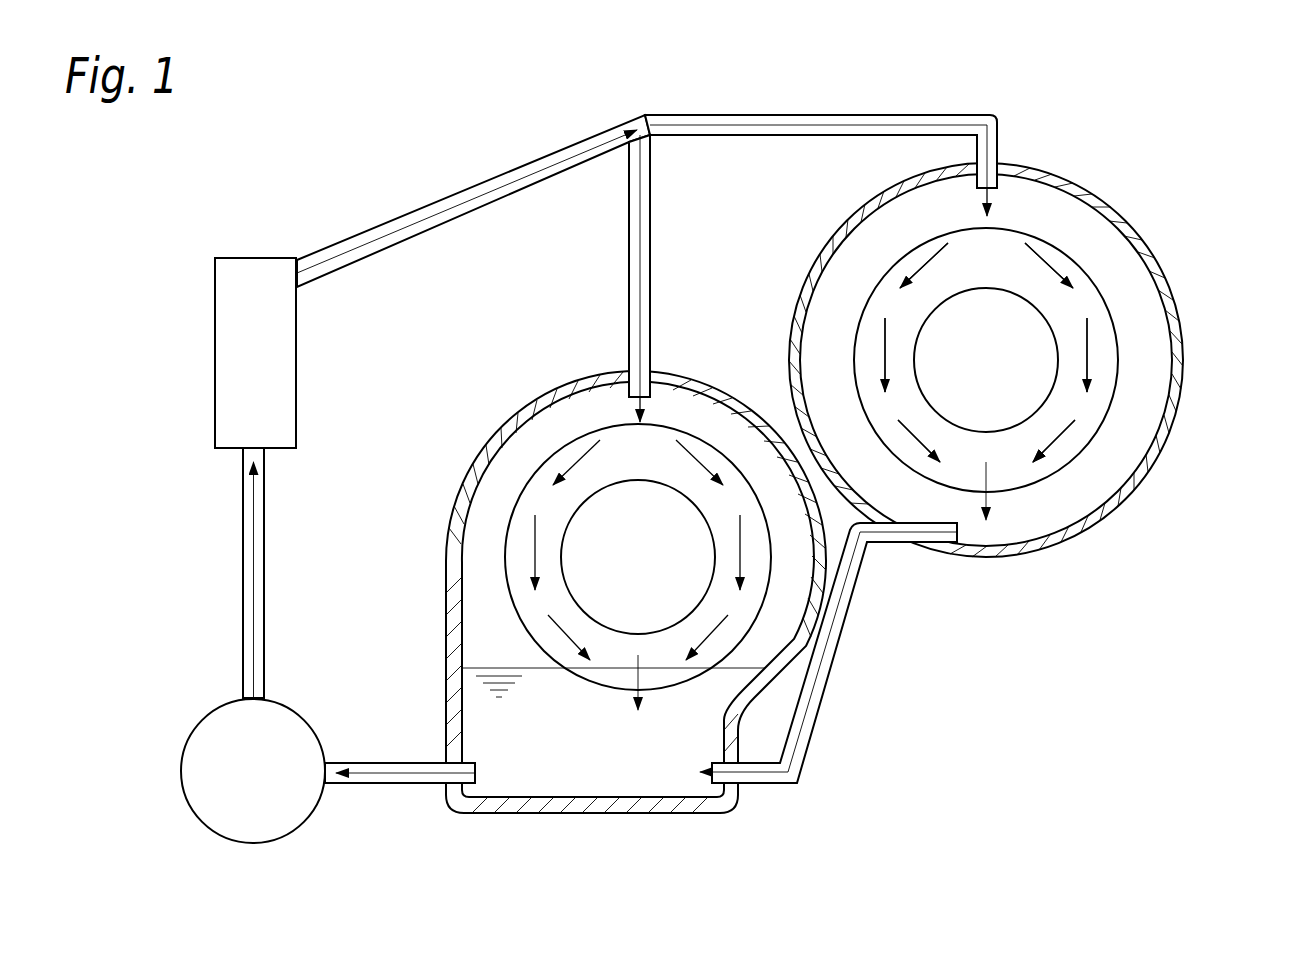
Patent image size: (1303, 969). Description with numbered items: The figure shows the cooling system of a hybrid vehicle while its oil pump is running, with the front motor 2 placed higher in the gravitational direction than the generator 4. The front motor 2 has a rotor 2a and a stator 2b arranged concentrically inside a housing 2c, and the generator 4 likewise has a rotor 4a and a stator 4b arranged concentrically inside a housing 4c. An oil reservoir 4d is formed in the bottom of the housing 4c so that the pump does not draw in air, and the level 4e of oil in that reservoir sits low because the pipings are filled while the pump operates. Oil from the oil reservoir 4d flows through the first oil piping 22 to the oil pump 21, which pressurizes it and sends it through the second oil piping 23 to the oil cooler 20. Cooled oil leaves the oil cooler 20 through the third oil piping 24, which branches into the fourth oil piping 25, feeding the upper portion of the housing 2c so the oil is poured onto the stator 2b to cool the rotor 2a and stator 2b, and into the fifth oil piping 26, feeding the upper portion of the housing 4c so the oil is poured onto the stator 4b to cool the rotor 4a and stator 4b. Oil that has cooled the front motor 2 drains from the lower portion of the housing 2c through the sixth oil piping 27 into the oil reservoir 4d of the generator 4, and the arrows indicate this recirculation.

The front motor 2 is at (1001, 339).
The rotor 2a is at (1040, 325).
The stator 2b is at (1095, 412).
The housing 2c is at (845, 242).
The generator 4 is at (609, 595).
The rotor 4a is at (580, 522).
The stator 4b is at (535, 605).
The housing 4c is at (710, 390).
The oil reservoir 4d is at (620, 795).
The level of oil 4e is at (490, 668).
The oil cooler 20 is at (230, 357).
The oil pump 21 is at (200, 777).
The first oil piping 22 is at (392, 784).
The second oil piping 23 is at (243, 577).
The third oil piping 24 is at (440, 196).
The fourth oil piping 25 is at (834, 113).
The fifth oil piping 26 is at (628, 262).
The sixth oil piping 27 is at (852, 640).